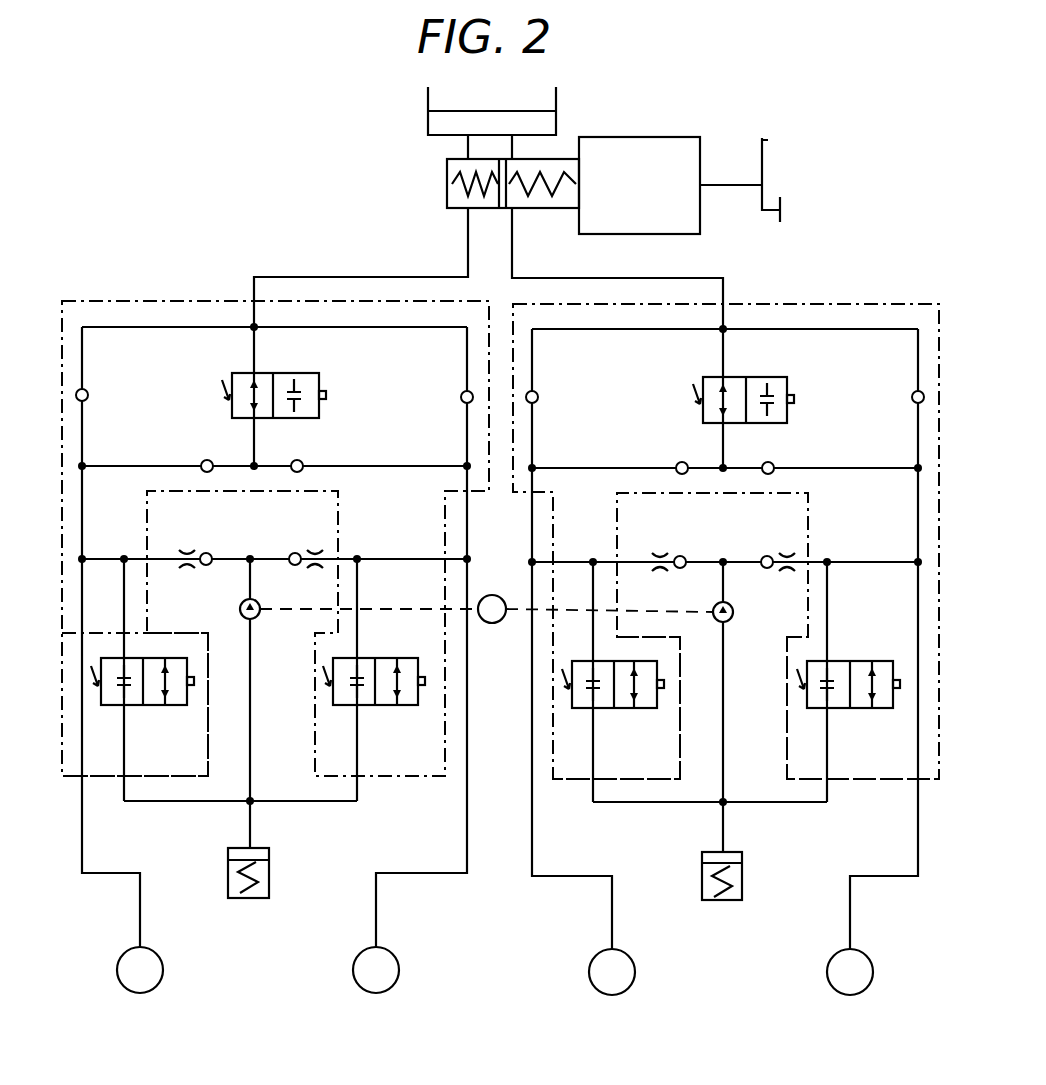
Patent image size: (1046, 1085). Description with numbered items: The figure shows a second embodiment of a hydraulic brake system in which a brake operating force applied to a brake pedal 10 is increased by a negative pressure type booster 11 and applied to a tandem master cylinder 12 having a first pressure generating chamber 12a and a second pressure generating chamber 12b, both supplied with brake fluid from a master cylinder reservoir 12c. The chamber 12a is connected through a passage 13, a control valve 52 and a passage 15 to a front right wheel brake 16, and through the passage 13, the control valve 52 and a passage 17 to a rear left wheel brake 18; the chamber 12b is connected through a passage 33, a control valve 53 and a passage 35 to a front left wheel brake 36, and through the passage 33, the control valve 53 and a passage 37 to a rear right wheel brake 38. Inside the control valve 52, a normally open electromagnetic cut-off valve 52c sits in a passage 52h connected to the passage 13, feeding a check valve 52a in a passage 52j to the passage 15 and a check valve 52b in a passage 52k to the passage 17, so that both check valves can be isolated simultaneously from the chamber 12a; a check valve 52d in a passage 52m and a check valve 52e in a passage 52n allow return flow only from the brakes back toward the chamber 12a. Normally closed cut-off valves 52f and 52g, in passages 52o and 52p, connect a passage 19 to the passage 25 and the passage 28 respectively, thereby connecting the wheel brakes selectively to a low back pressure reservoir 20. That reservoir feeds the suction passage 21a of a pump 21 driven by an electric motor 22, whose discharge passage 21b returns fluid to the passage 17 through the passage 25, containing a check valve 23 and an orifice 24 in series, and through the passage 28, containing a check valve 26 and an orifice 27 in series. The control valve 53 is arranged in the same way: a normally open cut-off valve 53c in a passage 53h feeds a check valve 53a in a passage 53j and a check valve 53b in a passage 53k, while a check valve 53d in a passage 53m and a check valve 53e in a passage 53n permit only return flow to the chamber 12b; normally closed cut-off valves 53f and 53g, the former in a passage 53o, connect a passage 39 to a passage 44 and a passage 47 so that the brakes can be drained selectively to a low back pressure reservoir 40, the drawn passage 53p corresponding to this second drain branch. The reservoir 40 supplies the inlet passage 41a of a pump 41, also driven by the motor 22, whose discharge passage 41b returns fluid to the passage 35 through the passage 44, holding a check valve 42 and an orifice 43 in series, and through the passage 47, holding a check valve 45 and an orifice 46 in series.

The brake pedal 10 is at (768, 140).
The negative pressure type booster 11 is at (668, 137).
The tandem master cylinder 12 is at (448, 178).
The first pressure generating chamber 12a is at (537, 208).
The second pressure generating chamber 12b is at (452, 197).
The master cylinder reservoir 12c is at (432, 122).
The passage 13 is at (670, 278).
The passage 33 is at (305, 277).
The passage 15 is at (916, 840).
The front right wheel brake 16 is at (873, 972).
The passage 17 is at (534, 840).
The rear left wheel brake 18 is at (635, 972).
The passage 19 is at (640, 802).
The low back pressure reservoir 20 is at (722, 900).
The pump 21 is at (730, 620).
The suction passage 21a is at (725, 710).
The discharge passage 21b is at (727, 580).
The electric motor 22 is at (493, 595).
The check valve 23 is at (762, 557).
The orifice 24 is at (788, 554).
The passage 25 is at (826, 560).
The check valve 26 is at (684, 557).
The orifice 27 is at (658, 554).
The passage 28 is at (606, 560).
The passage 35 is at (84, 836).
The front left wheel brake 36 is at (163, 970).
The passage 37 is at (466, 840).
The rear right wheel brake 38 is at (399, 970).
The passage 39 is at (182, 801).
The low back pressure reservoir 40 is at (252, 898).
The pump 41 is at (258, 616).
The inlet passage 41a is at (252, 742).
The discharge passage 41b is at (246, 597).
The check valve 42 is at (211, 554).
The orifice 43 is at (186, 551).
The passage 44 is at (135, 557).
The check valve 45 is at (290, 554).
The orifice 46 is at (310, 552).
The passage 47 is at (352, 556).
The control valve 52 is at (852, 304).
The check valve 52a is at (774, 463).
The check valve 52b is at (678, 462).
The normally open electromagnetic cut-off valve 52c is at (695, 388).
The check valve 52d is at (913, 390).
The check valve 52e is at (539, 397).
The normally closed electromagnetic cut-off valve 52f is at (845, 708).
The normally closed electromagnetic cut-off valve 52g is at (620, 708).
The passage 52h is at (727, 354).
The passage 52j is at (872, 466).
The passage 52k is at (590, 466).
The passage 52m is at (822, 329).
The passage 52n is at (615, 329).
The passage 52o is at (830, 607).
The passage 52p is at (595, 728).
The control valve 53 is at (232, 301).
The check valve 53a is at (205, 460).
The check valve 53b is at (303, 461).
The normally open electromagnetic cut-off valve 53c is at (224, 384).
The check valve 53d is at (89, 395).
The check valve 53e is at (462, 390).
The normally closed electromagnetic cut-off valve 53f is at (150, 705).
The normally closed electromagnetic cut-off valve 53g is at (380, 705).
The passage 53h is at (258, 352).
The passage 53j is at (125, 464).
The passage 53k is at (408, 464).
The passage 53m is at (150, 327).
The passage 53n is at (365, 327).
The passage 53o is at (122, 730).
The passage 53p is at (360, 636).